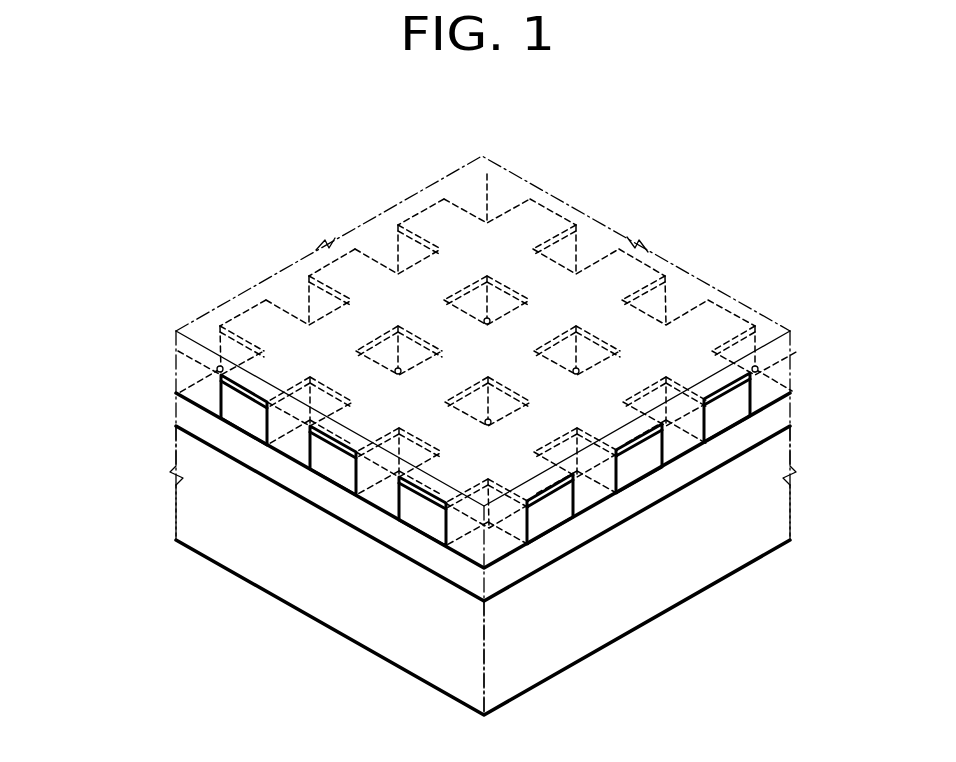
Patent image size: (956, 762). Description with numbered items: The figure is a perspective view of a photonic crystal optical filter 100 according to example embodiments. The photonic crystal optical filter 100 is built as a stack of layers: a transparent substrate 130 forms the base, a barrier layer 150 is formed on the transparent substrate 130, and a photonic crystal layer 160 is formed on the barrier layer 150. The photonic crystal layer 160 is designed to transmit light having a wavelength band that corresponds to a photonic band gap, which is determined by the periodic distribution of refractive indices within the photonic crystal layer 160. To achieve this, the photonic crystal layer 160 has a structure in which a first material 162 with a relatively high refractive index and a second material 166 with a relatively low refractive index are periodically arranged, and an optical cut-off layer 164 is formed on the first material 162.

The photonic crystal optical filter 100 is at (436, 435).
The transparent substrate 130 is at (183, 494).
The barrier layer 150 is at (183, 414).
The photonic crystal layer 160 is at (420, 435).
The first material 162 is at (216, 378).
The optical cut-off layer 164 is at (197, 357).
The second material 166 is at (196, 321).